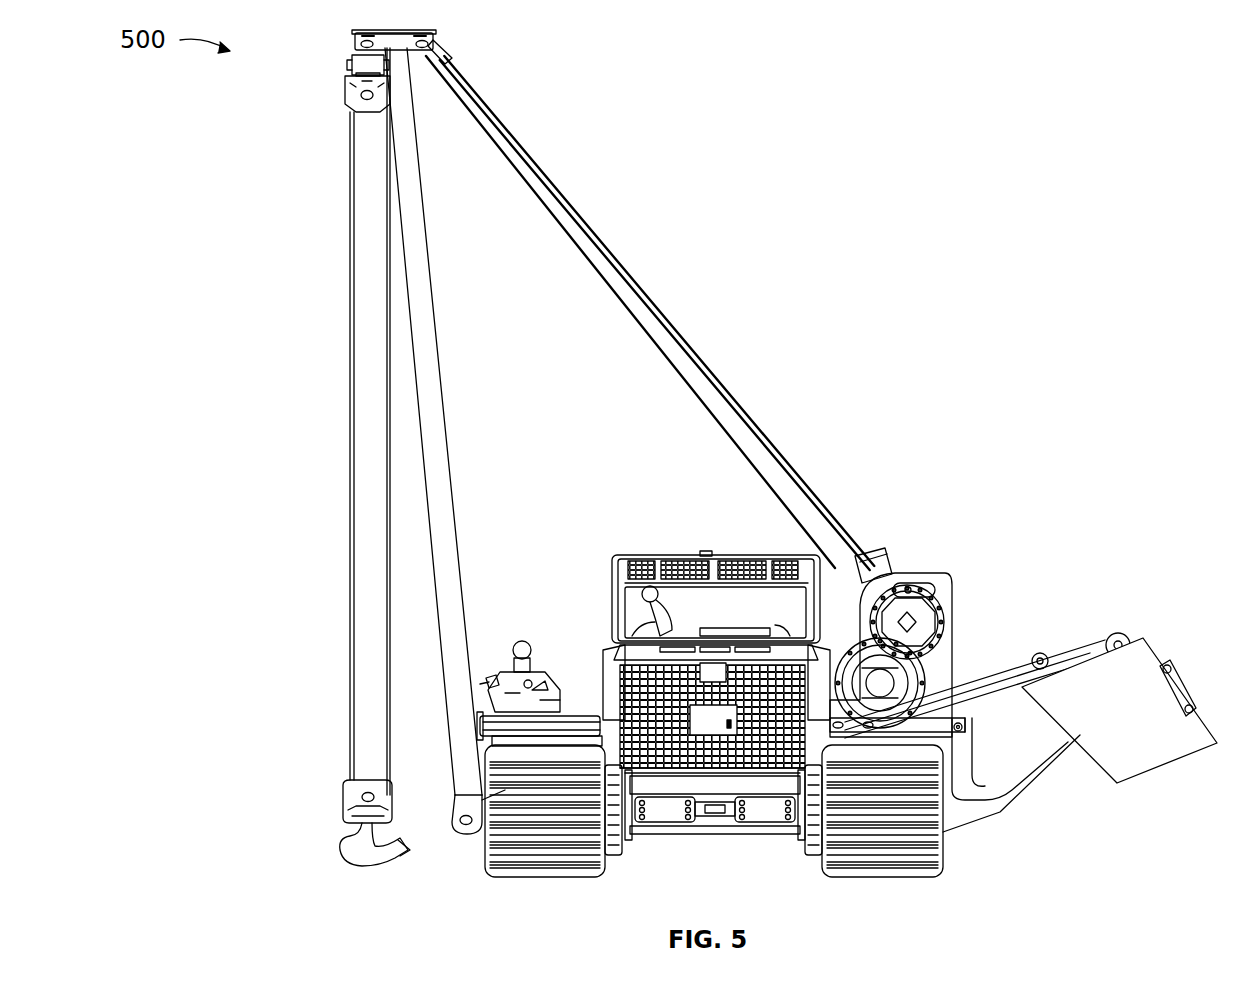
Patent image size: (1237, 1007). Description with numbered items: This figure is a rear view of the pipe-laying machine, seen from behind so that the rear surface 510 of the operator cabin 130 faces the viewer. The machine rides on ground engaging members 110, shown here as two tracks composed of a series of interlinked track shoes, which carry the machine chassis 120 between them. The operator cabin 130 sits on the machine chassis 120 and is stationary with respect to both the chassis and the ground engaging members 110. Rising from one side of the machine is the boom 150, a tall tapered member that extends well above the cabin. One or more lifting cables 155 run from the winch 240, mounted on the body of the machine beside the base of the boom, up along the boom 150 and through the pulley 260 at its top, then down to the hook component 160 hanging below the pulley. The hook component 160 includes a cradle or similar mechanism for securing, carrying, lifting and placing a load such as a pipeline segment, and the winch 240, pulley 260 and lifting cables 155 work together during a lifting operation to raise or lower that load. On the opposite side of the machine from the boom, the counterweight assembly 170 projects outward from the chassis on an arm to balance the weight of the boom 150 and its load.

The ground engaging members 110 is at (580, 875).
The machine chassis 120 is at (746, 835).
The operator cabin 130 is at (680, 613).
The boom 150 is at (432, 258).
The lifting cables 155 is at (350, 297).
The hook component 160 is at (345, 850).
The counterweight assembly 170 is at (1118, 783).
The winch 240 is at (950, 606).
The pulley 260 is at (345, 100).
The rear surface 510 is at (612, 580).